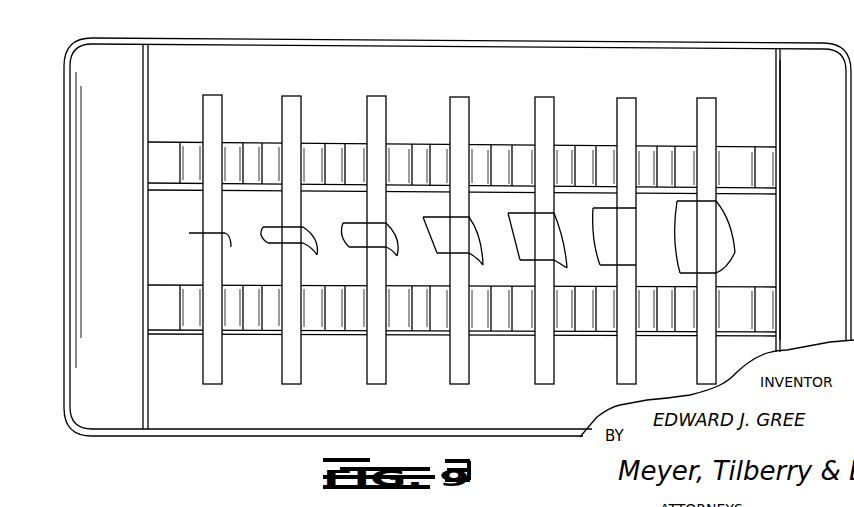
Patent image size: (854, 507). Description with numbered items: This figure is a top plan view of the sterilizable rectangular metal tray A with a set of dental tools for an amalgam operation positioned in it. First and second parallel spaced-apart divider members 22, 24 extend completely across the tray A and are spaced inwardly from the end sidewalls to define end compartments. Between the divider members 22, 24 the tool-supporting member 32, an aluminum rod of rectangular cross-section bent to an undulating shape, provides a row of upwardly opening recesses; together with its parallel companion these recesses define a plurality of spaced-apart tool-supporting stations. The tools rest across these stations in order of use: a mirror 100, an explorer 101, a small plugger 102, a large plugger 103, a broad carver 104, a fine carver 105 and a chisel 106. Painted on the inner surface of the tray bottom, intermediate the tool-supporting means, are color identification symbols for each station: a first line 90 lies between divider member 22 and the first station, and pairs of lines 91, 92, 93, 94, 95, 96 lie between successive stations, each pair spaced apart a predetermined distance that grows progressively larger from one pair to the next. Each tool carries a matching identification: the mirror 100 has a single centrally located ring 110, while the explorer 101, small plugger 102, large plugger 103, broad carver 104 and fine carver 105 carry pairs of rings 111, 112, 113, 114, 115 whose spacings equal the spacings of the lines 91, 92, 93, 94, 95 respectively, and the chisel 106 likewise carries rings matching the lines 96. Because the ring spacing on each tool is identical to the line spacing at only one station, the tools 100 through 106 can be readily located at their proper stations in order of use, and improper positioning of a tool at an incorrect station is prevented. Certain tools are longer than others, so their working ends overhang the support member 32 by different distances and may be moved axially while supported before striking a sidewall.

The first divider member 22 is at (143, 237).
The second divider member 24 is at (781, 188).
The tool-supporting member 32 is at (179, 118).
The first line 90 is at (189, 233).
The pair of lines 91 is at (263, 227).
The pair of lines 92 is at (343, 223).
The pair of lines 93 is at (423, 217).
The pair of lines 94 is at (508, 206).
The pair of lines 95 is at (593, 208).
The pair of lines 96 is at (677, 201).
The mirror 100 is at (222, 95).
The explorer 101 is at (301, 96).
The small plugger 102 is at (386, 96).
The large plugger 103 is at (469, 97).
The broad carver 104 is at (554, 97).
The fine carver 105 is at (636, 98).
The chisel 106 is at (716, 98).
The ring 110 is at (243, 249).
The pair of rings 111 is at (326, 251).
The pair of rings 112 is at (408, 249).
The pair of rings 113 is at (492, 249).
The pair of rings 114 is at (576, 248).
The pair of rings 115 is at (743, 237).
The tray A is at (783, 41).